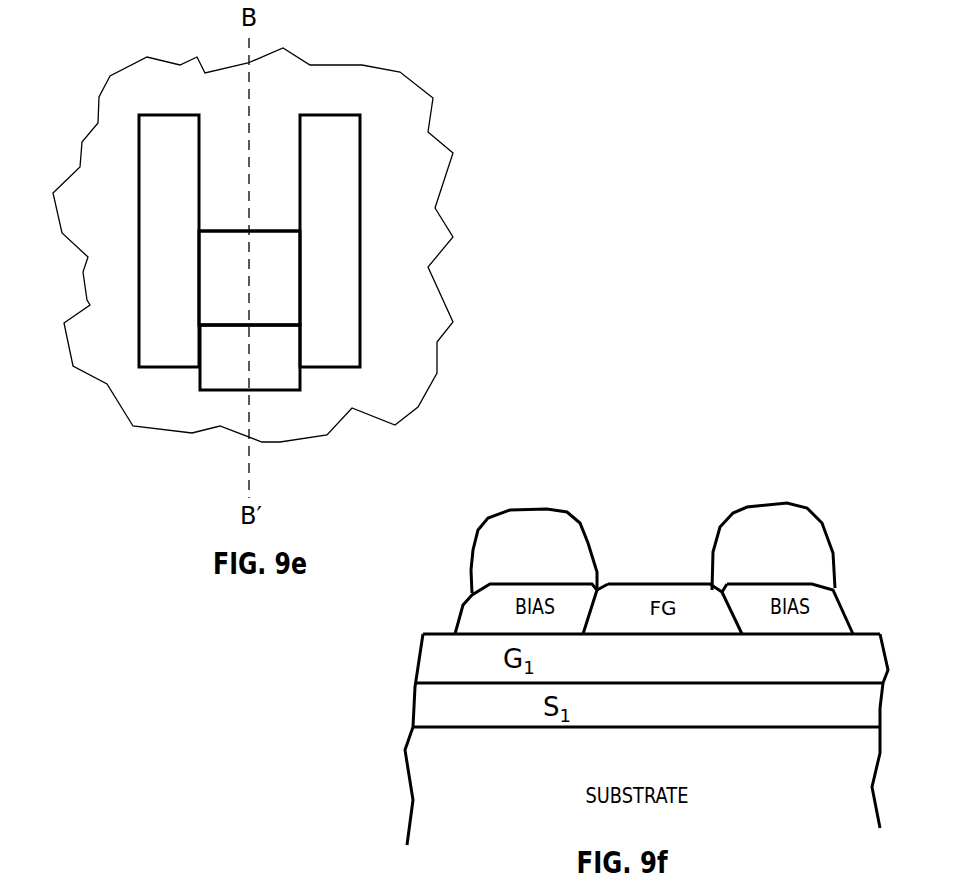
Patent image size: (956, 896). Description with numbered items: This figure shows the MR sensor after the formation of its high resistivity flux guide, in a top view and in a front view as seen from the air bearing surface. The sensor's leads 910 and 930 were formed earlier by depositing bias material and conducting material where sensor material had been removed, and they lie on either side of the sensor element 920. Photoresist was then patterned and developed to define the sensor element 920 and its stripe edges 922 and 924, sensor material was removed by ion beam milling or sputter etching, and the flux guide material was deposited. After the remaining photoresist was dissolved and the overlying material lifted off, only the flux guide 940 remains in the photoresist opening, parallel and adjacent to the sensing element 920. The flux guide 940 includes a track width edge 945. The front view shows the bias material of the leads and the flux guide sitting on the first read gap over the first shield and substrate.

The first pole 910 is at (172, 132).
The magnetoresistive sensor 920 is at (278, 255).
The sensor top edge 922 is at (260, 230).
The sensor / flux guide junction 924 is at (287, 317).
The second pole 930 is at (340, 198).
The flux guide 940 is at (287, 355).
The insulating region 945 is at (275, 393).